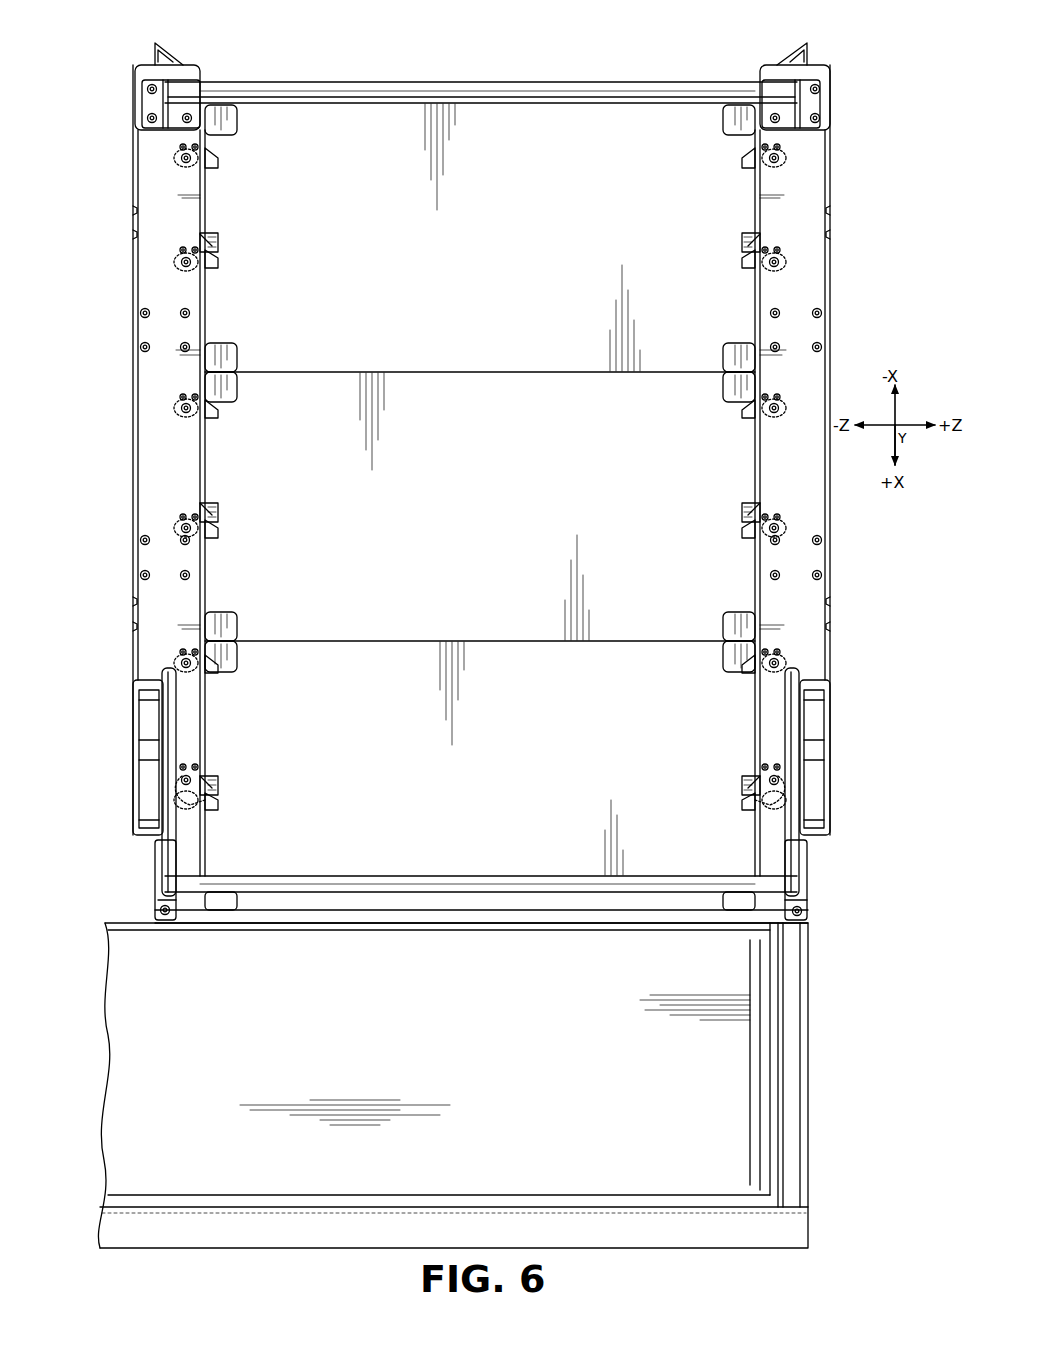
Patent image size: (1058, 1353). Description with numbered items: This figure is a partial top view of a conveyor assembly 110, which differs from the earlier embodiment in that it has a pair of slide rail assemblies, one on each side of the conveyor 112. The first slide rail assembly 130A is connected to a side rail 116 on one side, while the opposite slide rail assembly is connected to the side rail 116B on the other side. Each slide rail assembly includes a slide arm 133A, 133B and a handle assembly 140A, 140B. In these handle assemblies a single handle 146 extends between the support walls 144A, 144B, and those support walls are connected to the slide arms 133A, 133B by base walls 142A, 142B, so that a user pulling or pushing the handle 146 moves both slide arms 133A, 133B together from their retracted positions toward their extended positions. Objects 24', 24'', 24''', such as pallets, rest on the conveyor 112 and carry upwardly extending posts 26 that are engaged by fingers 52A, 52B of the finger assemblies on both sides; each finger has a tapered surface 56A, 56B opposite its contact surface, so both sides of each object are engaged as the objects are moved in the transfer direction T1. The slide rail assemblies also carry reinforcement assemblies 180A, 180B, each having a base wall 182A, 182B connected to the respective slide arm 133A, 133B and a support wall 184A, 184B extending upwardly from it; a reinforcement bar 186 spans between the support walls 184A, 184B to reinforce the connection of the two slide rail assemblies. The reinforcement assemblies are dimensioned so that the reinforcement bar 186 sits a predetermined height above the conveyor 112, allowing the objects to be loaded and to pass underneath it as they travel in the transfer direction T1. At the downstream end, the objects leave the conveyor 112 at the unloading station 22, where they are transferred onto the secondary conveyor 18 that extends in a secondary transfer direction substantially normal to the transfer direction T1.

The conveyor assembly 110 is at (822, 40).
The conveyor 112 is at (387, 80).
The transfer direction T1 is at (470, 20).
The reinforcement bar 186 is at (500, 82).
The reinforcement assembly 180B is at (105, 108).
The base wall 182B is at (165, 110).
The support wall 184B is at (165, 120).
The reinforcement assembly 180A is at (850, 104).
The base wall 182A is at (818, 104).
The support wall 184A is at (800, 100).
The slide rail assembly 130A is at (868, 208).
The slide arm 133A is at (832, 275).
The slide arm 133B is at (120, 392).
The object 24''' is at (480, 163).
The object 24'' is at (480, 367).
The object 24' is at (480, 640).
The finger 52B is at (222, 172).
The finger 52A is at (745, 172).
The tapered surface 56B is at (208, 240).
The tapered surface 56A is at (752, 782).
The post 26 is at (220, 243).
The base wall 142B is at (156, 722).
The base wall 142A is at (818, 722).
The support wall 144B is at (176, 786).
The support wall 144A is at (786, 786).
The handle assembly 140B is at (148, 840).
The handle assembly 140A is at (822, 840).
The handle 146 is at (480, 876).
The side rail 116B is at (165, 880).
The side rail 116 is at (810, 1060).
The unloading station 22 is at (145, 1026).
The secondary conveyor 18 is at (140, 1130).